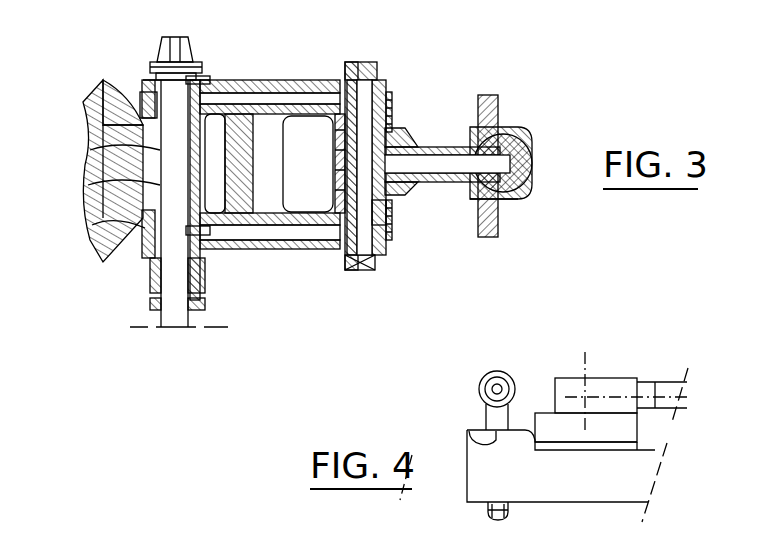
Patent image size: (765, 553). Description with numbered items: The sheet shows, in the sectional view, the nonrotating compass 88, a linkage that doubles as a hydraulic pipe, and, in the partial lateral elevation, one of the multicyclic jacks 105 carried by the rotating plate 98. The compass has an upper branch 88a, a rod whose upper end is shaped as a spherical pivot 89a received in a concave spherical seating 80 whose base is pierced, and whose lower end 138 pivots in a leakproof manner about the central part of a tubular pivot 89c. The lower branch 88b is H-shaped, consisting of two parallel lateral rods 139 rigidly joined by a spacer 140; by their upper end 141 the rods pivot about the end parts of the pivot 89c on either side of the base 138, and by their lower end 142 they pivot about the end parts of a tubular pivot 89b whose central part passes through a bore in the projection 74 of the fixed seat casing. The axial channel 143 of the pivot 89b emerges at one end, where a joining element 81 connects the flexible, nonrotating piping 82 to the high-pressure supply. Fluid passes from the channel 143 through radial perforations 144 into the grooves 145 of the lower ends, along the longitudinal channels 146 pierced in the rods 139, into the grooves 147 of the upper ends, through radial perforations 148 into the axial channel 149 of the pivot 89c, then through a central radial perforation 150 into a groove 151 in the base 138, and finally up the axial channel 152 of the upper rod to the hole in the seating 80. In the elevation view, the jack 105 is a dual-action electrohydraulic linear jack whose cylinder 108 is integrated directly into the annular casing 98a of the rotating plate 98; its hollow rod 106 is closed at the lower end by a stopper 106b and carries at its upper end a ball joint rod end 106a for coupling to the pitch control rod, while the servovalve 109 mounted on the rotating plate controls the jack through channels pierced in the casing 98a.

In FIG. 3, the projection 74 is at (232, 118).
In FIG. 3, the concave spherical seating 80 is at (518, 127).
In FIG. 3, the joining element 81 is at (152, 299).
In FIG. 3, the piping 82 is at (190, 322).
In FIG. 3, the nonrotating compass 88 is at (401, 154).
In FIG. 3, the upper branch 88a is at (463, 147).
In FIG. 3, the lower branch 88b is at (258, 250).
In FIG. 3, the spherical pivot 89a is at (512, 200).
In FIG. 3, the tubular pivot 89b is at (150, 176).
In FIG. 3, the tubular pivot 89c is at (365, 72).
In FIG. 3, the lower end 138 is at (382, 178).
In FIG. 3, the lateral rods 139 is at (262, 82).
In FIG. 3, the spacer 140 is at (248, 162).
In FIG. 3, the upper end 141 is at (385, 95).
In FIG. 3, the lower end 142 is at (148, 88).
In FIG. 3, the axial channel 143 is at (173, 157).
In FIG. 3, the radial perforations 144 is at (233, 40).
In FIG. 3, the grooves 145 is at (150, 96).
In FIG. 3, the longitudinal channels 146 is at (302, 100).
In FIG. 3, the grooves 147 is at (386, 112).
In FIG. 3, the radial perforations 148 is at (343, 70).
In FIG. 3, the axial channel 149 is at (362, 150).
In FIG. 3, the radial perforation 150 is at (378, 215).
In FIG. 3, the groove 151 is at (337, 165).
In FIG. 3, the axial channel 152 is at (518, 163).
In FIG. 4, the rotating plate 98 is at (540, 411).
In FIG. 4, the annular casing 98a is at (625, 426).
In FIG. 4, the multicyclic jack 105 is at (493, 437).
In FIG. 4, the rod 106 is at (470, 440).
In FIG. 4, the ball joint rod end 106a is at (482, 380).
In FIG. 4, the stopper 106b is at (508, 512).
In FIG. 4, the cylinder 108 is at (477, 487).
In FIG. 4, the servovalve 109 is at (608, 388).